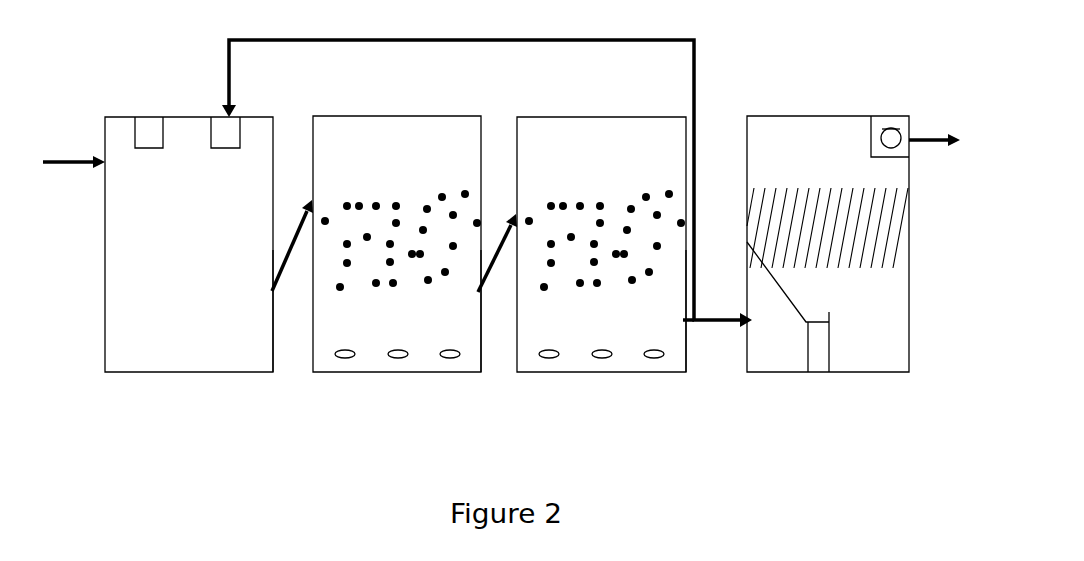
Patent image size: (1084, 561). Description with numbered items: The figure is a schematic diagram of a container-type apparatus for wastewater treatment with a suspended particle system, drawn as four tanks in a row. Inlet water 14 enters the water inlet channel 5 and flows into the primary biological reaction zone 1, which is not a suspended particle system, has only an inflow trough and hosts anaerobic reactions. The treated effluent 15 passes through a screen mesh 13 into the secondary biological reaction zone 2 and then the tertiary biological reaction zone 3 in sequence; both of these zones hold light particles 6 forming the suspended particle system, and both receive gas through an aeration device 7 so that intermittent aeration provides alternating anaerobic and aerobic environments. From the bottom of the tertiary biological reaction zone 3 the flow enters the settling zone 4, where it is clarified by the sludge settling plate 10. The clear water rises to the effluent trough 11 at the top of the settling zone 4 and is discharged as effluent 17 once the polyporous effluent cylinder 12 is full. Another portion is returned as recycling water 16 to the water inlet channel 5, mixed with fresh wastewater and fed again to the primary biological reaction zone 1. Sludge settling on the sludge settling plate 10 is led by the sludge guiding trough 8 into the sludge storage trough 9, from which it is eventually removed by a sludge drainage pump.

The primary biological reaction zone 1 is at (189, 244).
The secondary biological reaction zone 2 is at (397, 244).
The tertiary biological reaction zone 3 is at (601, 244).
The settling zone 4 is at (828, 244).
The water inlet channel 5 is at (146, 137).
The particles 6 is at (503, 173).
The aeration device 7 is at (499, 395).
The sludge guiding trough 8 is at (792, 310).
The sludge storage trough 9 is at (814, 352).
The sludge settling plate 10 is at (835, 230).
The effluent trough 11 is at (871, 155).
The effluent cylinder 12 is at (883, 128).
The screen mesh 13 is at (275, 320).
The inlet water 14 is at (74, 150).
The treated effluent 15 is at (497, 252).
The recycling water 16 is at (487, 183).
The effluent 17 is at (934, 131).